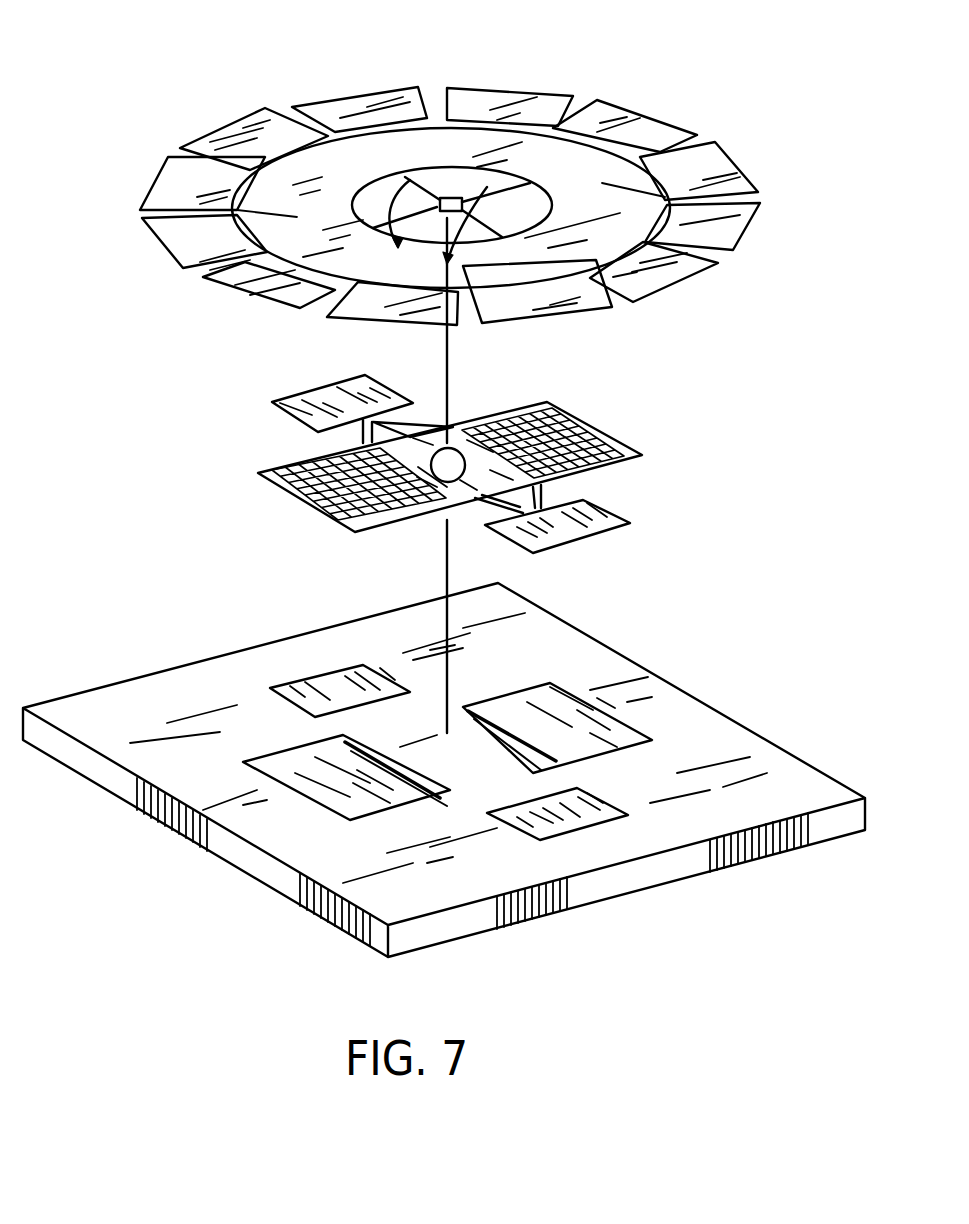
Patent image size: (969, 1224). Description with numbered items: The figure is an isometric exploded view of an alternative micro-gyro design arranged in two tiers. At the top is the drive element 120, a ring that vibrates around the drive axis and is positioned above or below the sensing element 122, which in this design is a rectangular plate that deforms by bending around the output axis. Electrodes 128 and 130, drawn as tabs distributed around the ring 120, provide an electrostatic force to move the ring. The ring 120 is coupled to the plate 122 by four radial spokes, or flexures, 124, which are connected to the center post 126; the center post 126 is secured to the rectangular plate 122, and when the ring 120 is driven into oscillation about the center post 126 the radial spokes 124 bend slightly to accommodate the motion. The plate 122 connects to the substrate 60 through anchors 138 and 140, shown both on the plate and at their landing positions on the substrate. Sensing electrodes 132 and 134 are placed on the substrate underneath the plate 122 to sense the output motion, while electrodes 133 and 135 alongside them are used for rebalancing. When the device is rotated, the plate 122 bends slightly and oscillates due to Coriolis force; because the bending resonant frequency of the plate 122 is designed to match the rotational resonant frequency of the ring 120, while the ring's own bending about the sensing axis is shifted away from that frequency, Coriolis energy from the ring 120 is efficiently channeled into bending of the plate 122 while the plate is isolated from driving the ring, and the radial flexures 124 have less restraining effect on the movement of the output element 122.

The substrate 60 is at (446, 770).
The drive element 120 is at (489, 163).
The sensing element 122 is at (620, 438).
The radial spokes 124 is at (451, 228).
The center post 126 is at (452, 200).
The electrode 128 is at (257, 150).
The electrode 130 is at (345, 105).
The sensing electrode 132 is at (603, 715).
The electrode 133 is at (550, 767).
The sensing electrode 134 is at (289, 817).
The electrode 135 is at (440, 800).
The anchor 138 is at (295, 393).
The anchor 140 is at (613, 522).